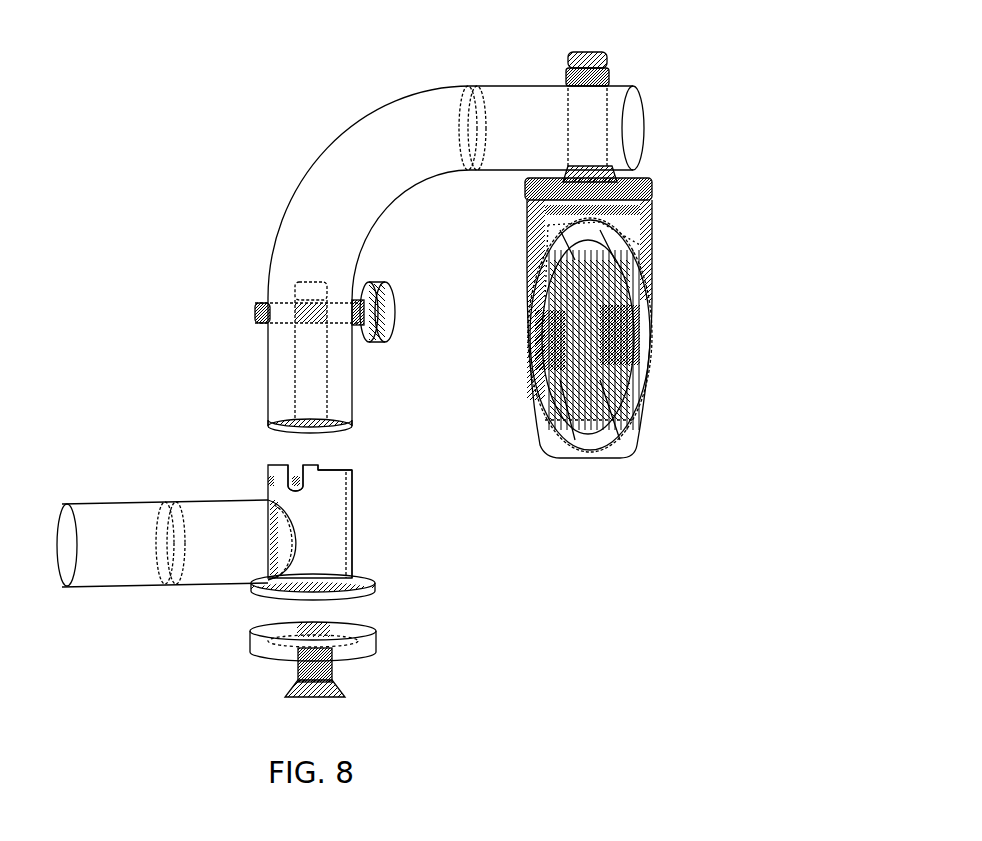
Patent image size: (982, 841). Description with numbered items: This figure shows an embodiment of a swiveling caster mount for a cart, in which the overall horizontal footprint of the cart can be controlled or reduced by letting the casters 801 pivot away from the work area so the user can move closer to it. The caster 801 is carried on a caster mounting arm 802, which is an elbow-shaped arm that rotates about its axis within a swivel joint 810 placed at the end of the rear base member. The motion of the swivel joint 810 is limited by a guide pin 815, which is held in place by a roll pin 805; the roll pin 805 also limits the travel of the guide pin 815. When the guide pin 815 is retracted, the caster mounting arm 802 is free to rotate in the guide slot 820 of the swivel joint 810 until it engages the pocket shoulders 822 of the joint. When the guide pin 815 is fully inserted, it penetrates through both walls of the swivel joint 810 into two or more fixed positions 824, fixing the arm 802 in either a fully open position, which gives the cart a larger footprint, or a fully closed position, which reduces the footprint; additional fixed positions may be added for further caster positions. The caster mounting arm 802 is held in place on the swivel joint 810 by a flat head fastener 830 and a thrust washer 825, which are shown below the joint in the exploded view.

The caster 801 is at (641, 228).
The caster mounting arm 802 is at (415, 131).
The roll pin 805 is at (298, 310).
The swivel joint 810 is at (332, 533).
The guide pin 815 is at (382, 328).
The guide slot 820 is at (345, 490).
The pocket shoulders 822 is at (318, 465).
The fixed positions 824 is at (296, 481).
The thrust washer 825 is at (361, 643).
The flat head fastener 830 is at (335, 688).